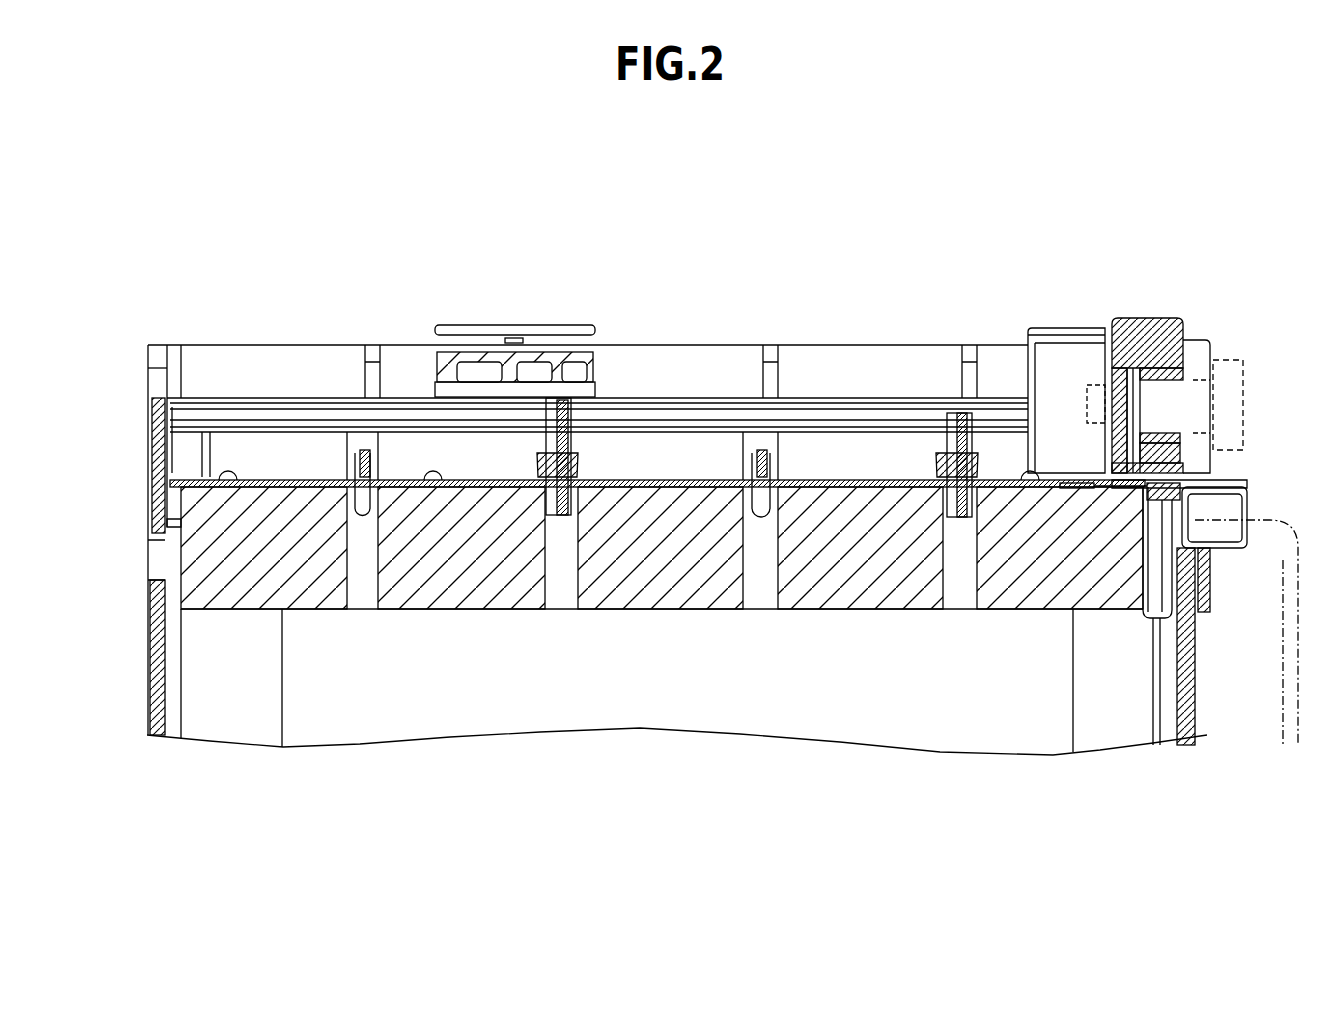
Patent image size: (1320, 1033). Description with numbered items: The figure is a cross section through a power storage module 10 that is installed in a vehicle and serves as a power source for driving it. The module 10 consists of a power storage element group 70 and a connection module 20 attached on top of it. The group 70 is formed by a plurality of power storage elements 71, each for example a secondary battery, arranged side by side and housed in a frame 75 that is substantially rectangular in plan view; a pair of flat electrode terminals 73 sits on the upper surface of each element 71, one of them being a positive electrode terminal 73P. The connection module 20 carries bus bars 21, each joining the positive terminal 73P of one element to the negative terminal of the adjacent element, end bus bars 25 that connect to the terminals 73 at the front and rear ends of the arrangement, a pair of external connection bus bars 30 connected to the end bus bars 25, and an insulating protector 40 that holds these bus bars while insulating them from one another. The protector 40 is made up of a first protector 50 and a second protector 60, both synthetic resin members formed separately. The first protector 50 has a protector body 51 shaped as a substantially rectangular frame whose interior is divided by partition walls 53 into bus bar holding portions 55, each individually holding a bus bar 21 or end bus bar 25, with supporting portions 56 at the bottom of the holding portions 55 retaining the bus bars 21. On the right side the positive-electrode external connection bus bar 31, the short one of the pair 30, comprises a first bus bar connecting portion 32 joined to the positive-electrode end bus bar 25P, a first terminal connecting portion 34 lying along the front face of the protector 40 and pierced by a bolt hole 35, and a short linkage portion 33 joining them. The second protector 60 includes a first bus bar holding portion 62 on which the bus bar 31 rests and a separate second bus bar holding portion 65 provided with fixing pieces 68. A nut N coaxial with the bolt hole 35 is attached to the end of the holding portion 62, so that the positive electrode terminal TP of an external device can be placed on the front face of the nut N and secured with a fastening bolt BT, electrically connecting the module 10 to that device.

The power storage module 10 is at (160, 268).
The connection module 20 is at (761, 318).
The bus bar 21 is at (258, 480).
The end bus bar 25 is at (1062, 378).
The positive-electrode end bus bar 25P is at (1036, 482).
The external connection bus bar 30 is at (1167, 650).
The positive-electrode external connection bus bar 31 is at (1120, 610).
The first bus bar connecting portion 32 is at (1065, 610).
The short linkage portion 33 is at (1165, 445).
The first terminal connecting portion 34 is at (1252, 370).
The bolt hole 35 is at (1175, 462).
The insulating protector 40 is at (1090, 190).
The first protector 50 is at (933, 335).
The protector body 51 is at (690, 350).
The partition wall 53 is at (566, 430).
The bus bar holding portion 55 is at (403, 450).
The supporting portion 56 is at (358, 516).
The second protector 60 is at (1113, 318).
The first bus bar holding portion 62 is at (1149, 304).
The second bus bar holding portion 65 is at (515, 300).
The fixing piece 68 is at (512, 315).
The power storage element group 70 is at (662, 671).
The power storage element 71 is at (865, 812).
The electrode terminal 73 is at (657, 662).
The positive electrode terminal 73P is at (222, 490).
The frame 75 is at (152, 648).
The nut N is at (1172, 340).
The fastening bolt BT is at (1190, 345).
The positive electrode terminal TP is at (1282, 682).